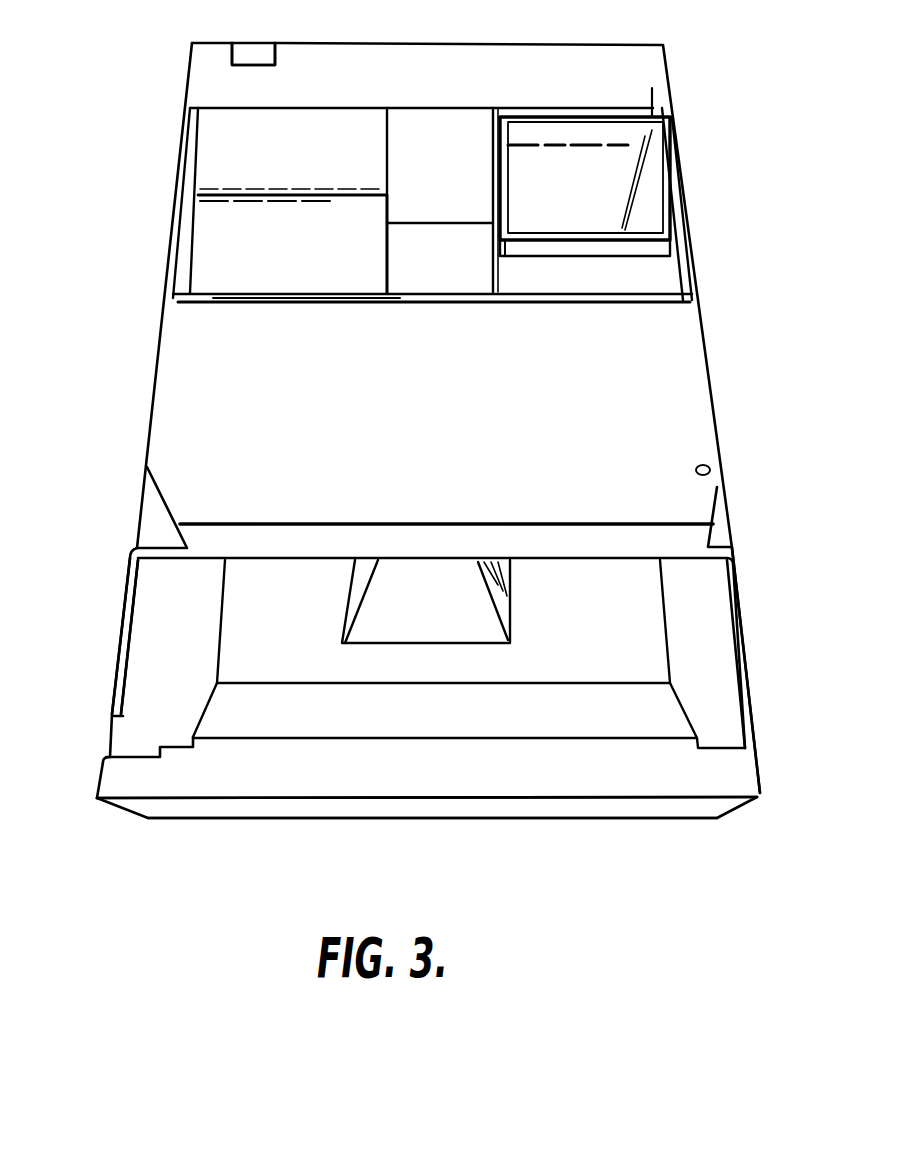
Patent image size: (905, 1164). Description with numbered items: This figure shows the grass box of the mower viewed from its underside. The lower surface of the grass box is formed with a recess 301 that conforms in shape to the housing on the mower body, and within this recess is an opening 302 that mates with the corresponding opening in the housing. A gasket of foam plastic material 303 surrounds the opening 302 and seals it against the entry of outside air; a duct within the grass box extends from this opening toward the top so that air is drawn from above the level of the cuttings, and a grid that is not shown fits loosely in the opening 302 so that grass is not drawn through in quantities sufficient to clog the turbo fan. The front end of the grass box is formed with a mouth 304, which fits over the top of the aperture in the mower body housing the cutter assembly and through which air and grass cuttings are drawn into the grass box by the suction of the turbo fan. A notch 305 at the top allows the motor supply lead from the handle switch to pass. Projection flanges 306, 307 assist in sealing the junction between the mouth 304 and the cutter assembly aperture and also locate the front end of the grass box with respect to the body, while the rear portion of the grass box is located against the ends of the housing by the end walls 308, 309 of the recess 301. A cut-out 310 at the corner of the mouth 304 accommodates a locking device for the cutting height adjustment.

The recess 301 is at (288, 207).
The opening 302 is at (618, 168).
The gasket of foam plastic material 303 is at (667, 250).
The mouth 304 is at (627, 618).
The notch 305 is at (240, 55).
The projection flange 306 is at (198, 530).
The projection flange 307 is at (263, 767).
The end wall 308 is at (123, 620).
The end wall 309 is at (735, 697).
The cut-out 310 is at (112, 738).